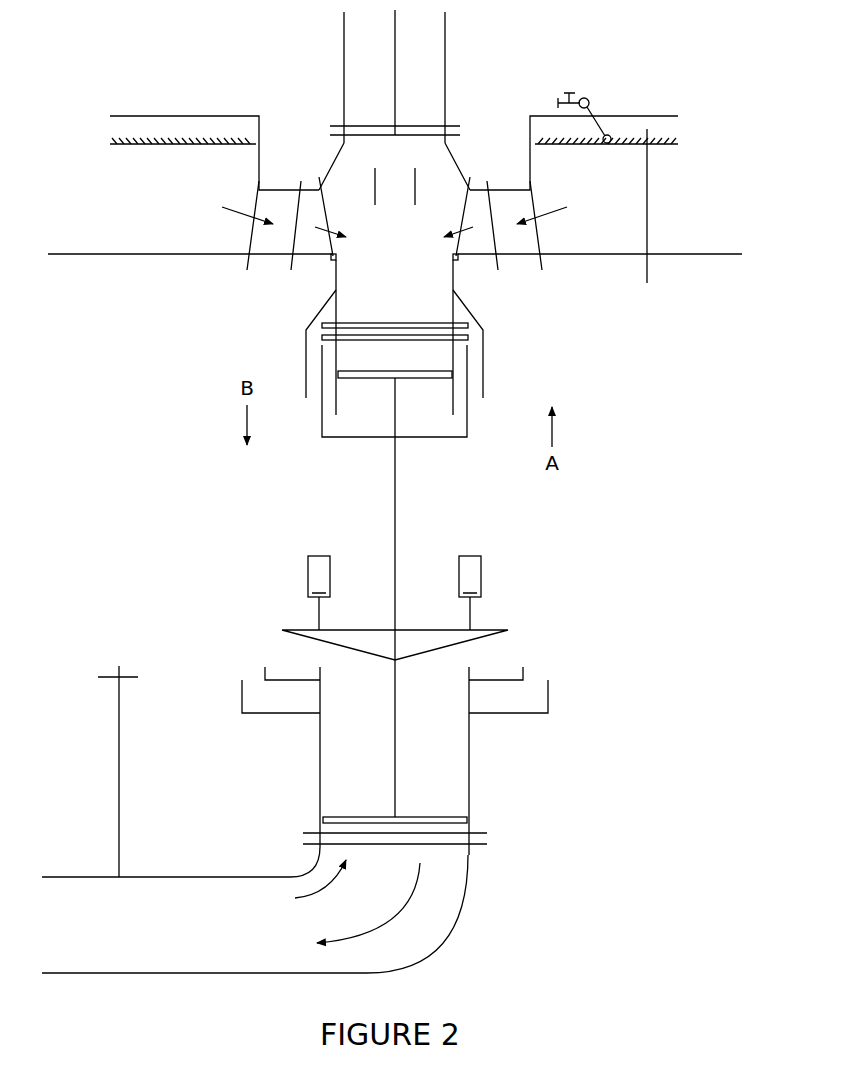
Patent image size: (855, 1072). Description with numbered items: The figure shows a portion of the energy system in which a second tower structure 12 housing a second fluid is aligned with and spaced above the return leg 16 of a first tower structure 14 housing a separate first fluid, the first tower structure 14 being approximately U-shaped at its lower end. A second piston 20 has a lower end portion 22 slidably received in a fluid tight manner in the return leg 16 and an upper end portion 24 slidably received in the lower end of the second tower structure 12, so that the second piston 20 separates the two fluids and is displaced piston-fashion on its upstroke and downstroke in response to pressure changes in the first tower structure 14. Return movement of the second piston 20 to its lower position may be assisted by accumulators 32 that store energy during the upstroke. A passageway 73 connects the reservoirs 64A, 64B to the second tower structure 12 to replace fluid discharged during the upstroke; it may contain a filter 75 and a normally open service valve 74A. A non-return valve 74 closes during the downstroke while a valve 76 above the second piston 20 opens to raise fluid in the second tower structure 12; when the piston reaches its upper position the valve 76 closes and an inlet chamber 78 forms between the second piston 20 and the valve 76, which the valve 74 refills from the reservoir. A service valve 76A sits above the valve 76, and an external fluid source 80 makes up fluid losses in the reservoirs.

The second tower structure 12 is at (427, 76).
The first tower structure 14 is at (63, 877).
The return leg 16 is at (338, 785).
The second piston 20 is at (395, 498).
The lower end portion 22 is at (470, 815).
The upper end portion 24 is at (368, 382).
The accumulator 32 is at (310, 573).
The reservoir 64A is at (680, 240).
The reservoir 64B is at (108, 240).
The passageway 73 is at (603, 242).
The valve 74 is at (325, 242).
The service valve 74A is at (245, 262).
The filter 75 is at (282, 262).
The valve 76 is at (341, 139).
The service valve 76A is at (330, 126).
The inlet chamber 78 is at (342, 314).
The external fluid source 80 is at (590, 101).